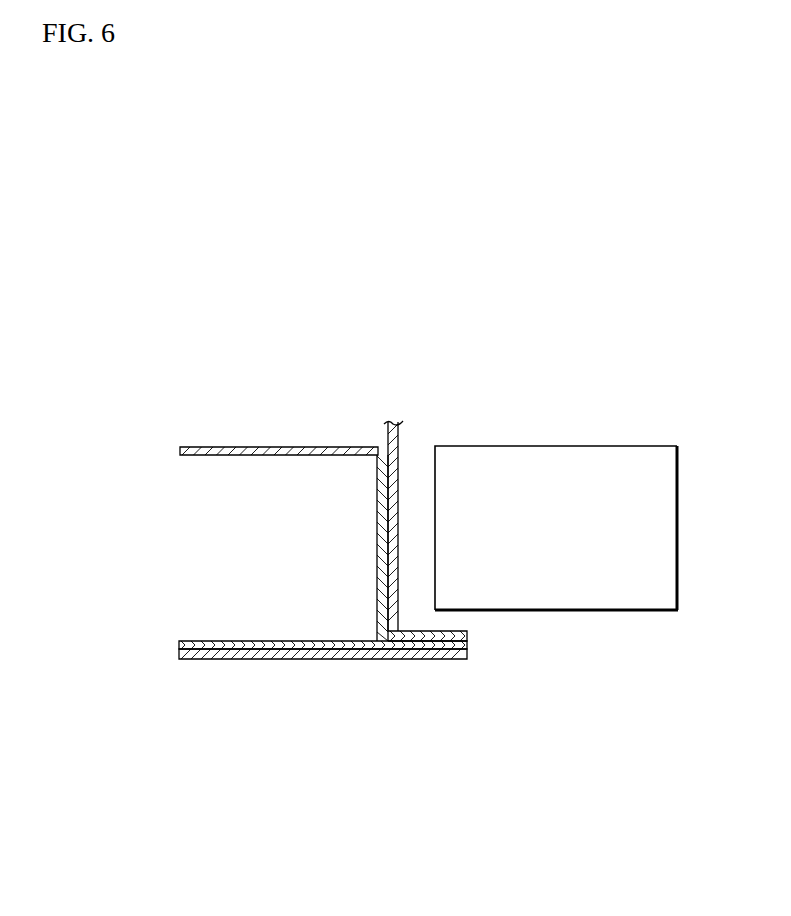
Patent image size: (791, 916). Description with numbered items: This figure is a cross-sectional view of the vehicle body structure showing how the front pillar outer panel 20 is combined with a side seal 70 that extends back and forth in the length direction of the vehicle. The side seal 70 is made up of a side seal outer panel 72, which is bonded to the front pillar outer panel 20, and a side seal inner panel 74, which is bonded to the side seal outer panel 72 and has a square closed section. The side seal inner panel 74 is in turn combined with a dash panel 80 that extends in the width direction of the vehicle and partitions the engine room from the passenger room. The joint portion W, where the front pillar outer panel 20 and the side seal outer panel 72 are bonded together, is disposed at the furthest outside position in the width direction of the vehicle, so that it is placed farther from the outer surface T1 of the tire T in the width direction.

The front pillar outer panel 20 is at (321, 667).
The side seal 70 is at (72, 488).
The side seal outer panel 72 is at (220, 641).
The side seal inner panel 74 is at (195, 447).
The dash panel 80 is at (398, 440).
The joint portion W is at (435, 659).
The tire T is at (556, 575).
The outer surface T1 is at (597, 610).